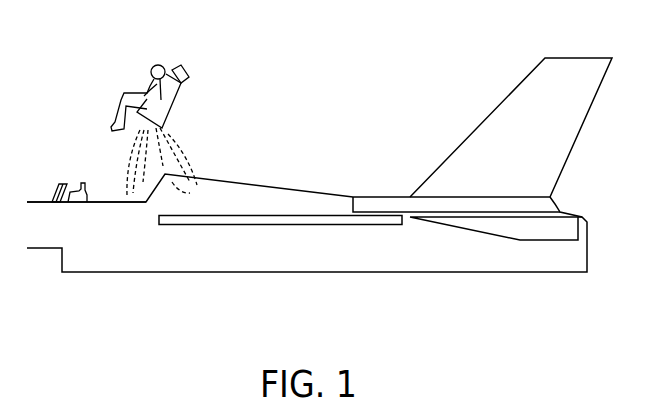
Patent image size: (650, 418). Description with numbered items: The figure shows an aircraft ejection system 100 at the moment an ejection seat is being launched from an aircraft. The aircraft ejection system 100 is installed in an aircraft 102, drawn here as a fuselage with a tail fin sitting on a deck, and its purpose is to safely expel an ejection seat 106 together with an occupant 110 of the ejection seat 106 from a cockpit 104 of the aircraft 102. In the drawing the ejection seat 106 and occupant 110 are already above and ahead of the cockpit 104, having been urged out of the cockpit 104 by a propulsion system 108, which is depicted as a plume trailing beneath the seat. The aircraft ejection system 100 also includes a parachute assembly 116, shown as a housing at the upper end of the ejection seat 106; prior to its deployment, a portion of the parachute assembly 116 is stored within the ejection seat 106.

The aircraft ejection system 100 is at (248, 115).
The aircraft 102 is at (333, 254).
The cockpit 104 is at (98, 192).
The ejection seat 106 is at (155, 113).
The propulsion system 108 is at (167, 147).
The occupant 110 is at (153, 64).
The parachute assembly 116 is at (188, 70).